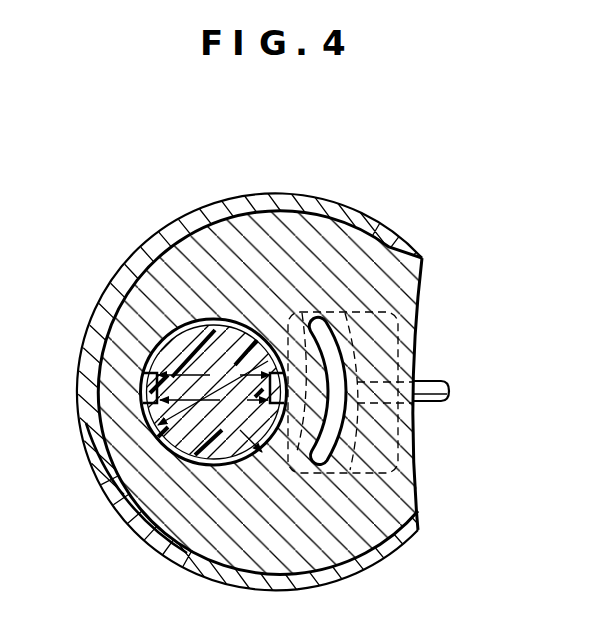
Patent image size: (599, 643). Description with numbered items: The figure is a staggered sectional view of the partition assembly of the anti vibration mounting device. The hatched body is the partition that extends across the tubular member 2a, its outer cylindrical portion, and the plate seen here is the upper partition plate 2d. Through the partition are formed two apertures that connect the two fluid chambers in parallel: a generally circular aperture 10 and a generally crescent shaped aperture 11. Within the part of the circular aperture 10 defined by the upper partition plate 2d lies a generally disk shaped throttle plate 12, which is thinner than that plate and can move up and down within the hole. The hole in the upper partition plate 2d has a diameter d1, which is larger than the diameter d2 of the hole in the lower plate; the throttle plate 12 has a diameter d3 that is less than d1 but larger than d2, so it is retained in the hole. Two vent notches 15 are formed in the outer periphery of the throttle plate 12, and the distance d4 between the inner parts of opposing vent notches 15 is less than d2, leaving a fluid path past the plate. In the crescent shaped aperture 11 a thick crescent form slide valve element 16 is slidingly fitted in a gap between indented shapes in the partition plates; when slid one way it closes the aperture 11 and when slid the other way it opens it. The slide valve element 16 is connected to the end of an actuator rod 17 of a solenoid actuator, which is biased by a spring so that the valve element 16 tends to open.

The tubular member 2a is at (292, 196).
The upper partition plate 2d is at (380, 252).
The circular aperture 10 is at (155, 398).
The crescent shaped aperture 11 is at (318, 332).
The throttle plate 12 is at (221, 452).
The vent notches 15 is at (150, 393).
The slide valve element 16 is at (335, 470).
The actuator rod 17 is at (430, 383).
The diameter of the aperture part in the upper partition plate d1 is at (243, 430).
The diameter of the aperture part in the lower partition plate d2 is at (214, 378).
The diameter of the throttle plate d3 is at (213, 396).
The distance between inner parts of opposing vent notches d4 is at (214, 403).